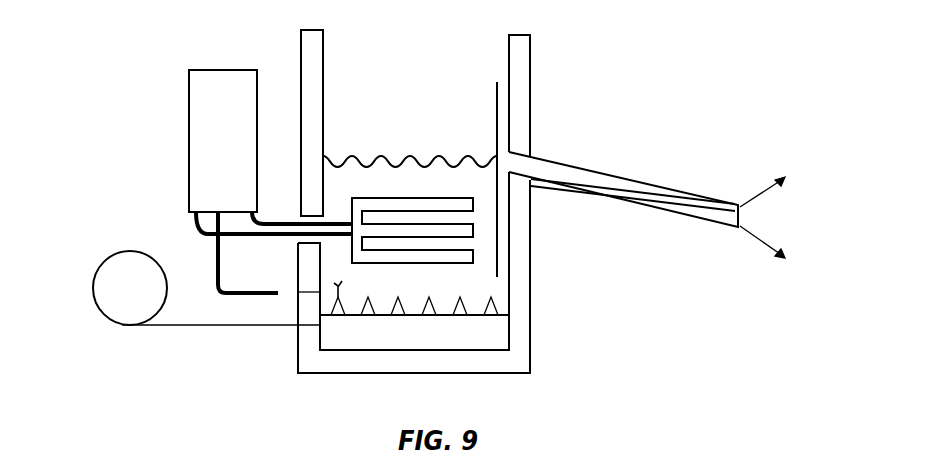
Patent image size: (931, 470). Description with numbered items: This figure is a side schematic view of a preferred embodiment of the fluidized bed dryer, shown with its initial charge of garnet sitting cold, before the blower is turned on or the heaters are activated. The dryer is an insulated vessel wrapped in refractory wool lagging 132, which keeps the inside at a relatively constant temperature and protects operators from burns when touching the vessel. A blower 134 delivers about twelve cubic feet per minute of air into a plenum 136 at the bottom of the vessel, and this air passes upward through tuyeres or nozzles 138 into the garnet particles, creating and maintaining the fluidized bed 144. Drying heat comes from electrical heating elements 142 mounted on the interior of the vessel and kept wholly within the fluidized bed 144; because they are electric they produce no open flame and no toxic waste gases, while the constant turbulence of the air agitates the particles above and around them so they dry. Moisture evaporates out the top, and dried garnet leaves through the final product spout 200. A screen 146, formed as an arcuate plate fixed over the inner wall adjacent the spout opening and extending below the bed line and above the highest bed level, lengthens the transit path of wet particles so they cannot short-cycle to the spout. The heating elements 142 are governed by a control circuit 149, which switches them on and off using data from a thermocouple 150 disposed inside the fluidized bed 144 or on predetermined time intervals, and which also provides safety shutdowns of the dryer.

The refractory wool lagging 132 is at (532, 57).
The blower 134 is at (151, 301).
The plenum 136 is at (436, 345).
The tuyeres or nozzles 138 is at (497, 312).
The electrical heating elements 142 is at (398, 198).
The fluidized bed 144 is at (436, 293).
The screen 146 is at (497, 127).
The control circuit 149 is at (244, 152).
The thermocouple 150 is at (333, 286).
The final product spout 200 is at (600, 172).